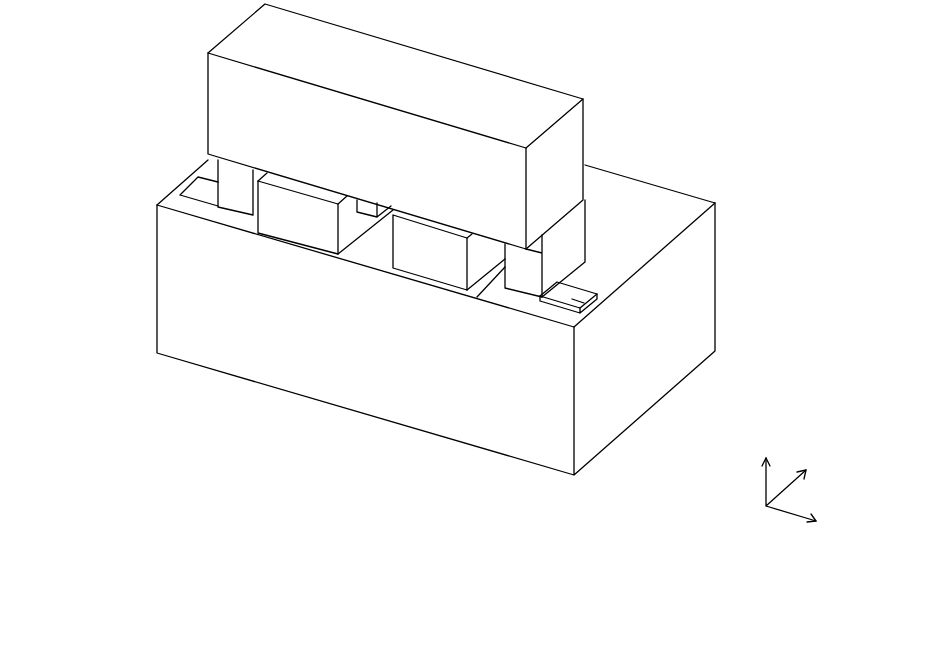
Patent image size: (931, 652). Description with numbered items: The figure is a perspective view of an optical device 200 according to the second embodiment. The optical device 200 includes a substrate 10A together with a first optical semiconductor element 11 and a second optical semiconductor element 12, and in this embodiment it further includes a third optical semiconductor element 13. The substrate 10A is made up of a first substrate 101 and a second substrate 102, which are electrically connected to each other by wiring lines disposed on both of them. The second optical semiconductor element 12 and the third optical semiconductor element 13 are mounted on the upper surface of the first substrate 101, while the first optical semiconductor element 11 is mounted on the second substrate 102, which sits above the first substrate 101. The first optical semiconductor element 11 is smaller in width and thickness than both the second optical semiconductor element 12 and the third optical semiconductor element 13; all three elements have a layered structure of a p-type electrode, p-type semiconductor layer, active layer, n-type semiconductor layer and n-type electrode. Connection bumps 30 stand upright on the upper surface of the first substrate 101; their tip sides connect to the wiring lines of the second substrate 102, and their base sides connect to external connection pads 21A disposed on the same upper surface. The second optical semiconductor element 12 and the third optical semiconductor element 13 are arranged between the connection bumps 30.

The optical device 200 is at (128, 41).
The substrate 10A is at (117, 80).
The first substrate 101 is at (182, 245).
The second substrate 102 is at (242, 112).
The first optical semiconductor element 11 is at (367, 197).
The second optical semiconductor element 12 is at (294, 219).
The third optical semiconductor element 13 is at (426, 257).
The connection bumps 30 is at (567, 238).
The external connection pads 21A is at (583, 300).